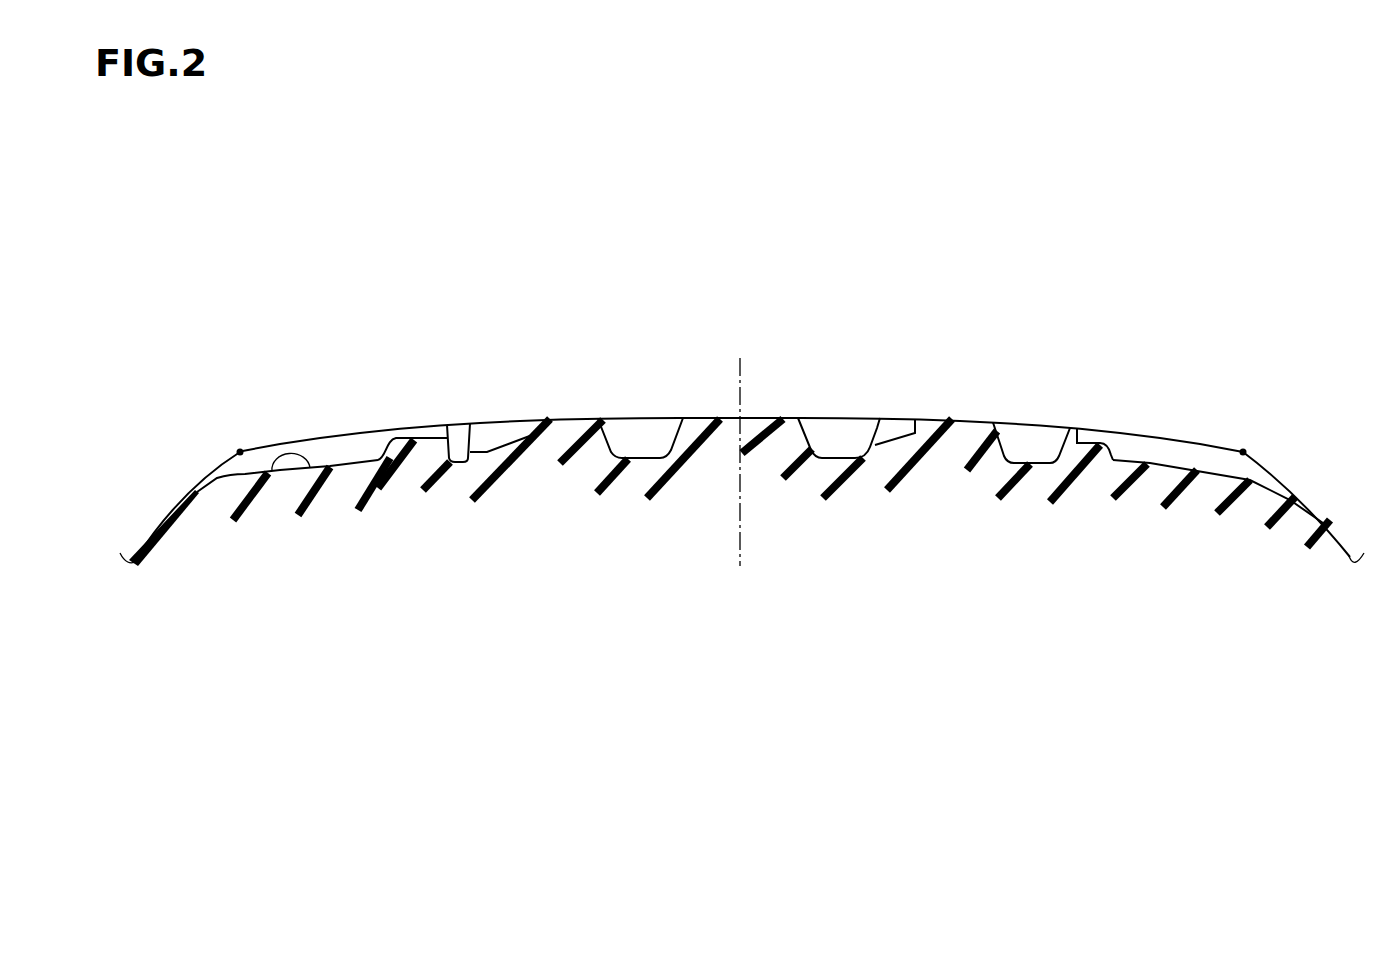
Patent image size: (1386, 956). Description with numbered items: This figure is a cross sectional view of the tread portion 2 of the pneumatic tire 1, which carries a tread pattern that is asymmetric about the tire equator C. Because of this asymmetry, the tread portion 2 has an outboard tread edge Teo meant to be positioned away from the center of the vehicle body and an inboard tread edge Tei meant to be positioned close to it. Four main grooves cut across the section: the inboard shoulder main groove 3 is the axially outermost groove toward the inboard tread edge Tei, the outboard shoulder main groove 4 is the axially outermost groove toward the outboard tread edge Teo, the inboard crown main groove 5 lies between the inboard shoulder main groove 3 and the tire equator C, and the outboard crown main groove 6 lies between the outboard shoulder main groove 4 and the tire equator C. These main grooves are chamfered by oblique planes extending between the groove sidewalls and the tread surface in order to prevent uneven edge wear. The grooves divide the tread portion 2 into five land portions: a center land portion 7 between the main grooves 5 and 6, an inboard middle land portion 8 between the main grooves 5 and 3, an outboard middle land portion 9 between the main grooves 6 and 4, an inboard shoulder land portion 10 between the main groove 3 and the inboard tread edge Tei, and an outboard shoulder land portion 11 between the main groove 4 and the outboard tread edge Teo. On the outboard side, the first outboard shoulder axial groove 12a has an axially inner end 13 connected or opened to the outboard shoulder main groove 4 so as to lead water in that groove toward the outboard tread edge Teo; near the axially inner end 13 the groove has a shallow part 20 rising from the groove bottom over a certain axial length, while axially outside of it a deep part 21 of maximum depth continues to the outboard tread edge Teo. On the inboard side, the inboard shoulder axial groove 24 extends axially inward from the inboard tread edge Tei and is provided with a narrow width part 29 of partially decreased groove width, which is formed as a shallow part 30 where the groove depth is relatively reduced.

The pneumatic tire 1 is at (965, 288).
The tread portion 2 is at (845, 343).
The inboard shoulder main groove 3 is at (1032, 435).
The outboard shoulder main groove 4 is at (460, 437).
The inboard crown main groove 5 is at (840, 433).
The outboard crown main groove 6 is at (645, 435).
The center land portion 7 is at (770, 415).
The inboard middle land portion 8 is at (957, 418).
The outboard middle land portion 9 is at (565, 414).
The inboard shoulder land portion 10 is at (1171, 428).
The outboard shoulder land portion 11 is at (277, 440).
The first outboard shoulder axial groove 12a is at (333, 443).
The axially inner end 13 is at (448, 426).
The shallow part 20 is at (422, 437).
The deep part 21 is at (277, 473).
The inboard shoulder axial groove 24 is at (1197, 457).
The narrow width part 29 is at (1128, 391).
The shallow part 30 is at (1087, 432).
The tire equator C is at (741, 446).
The outboard tread edge Teo is at (238, 452).
The inboard tread edge Tei is at (1245, 452).